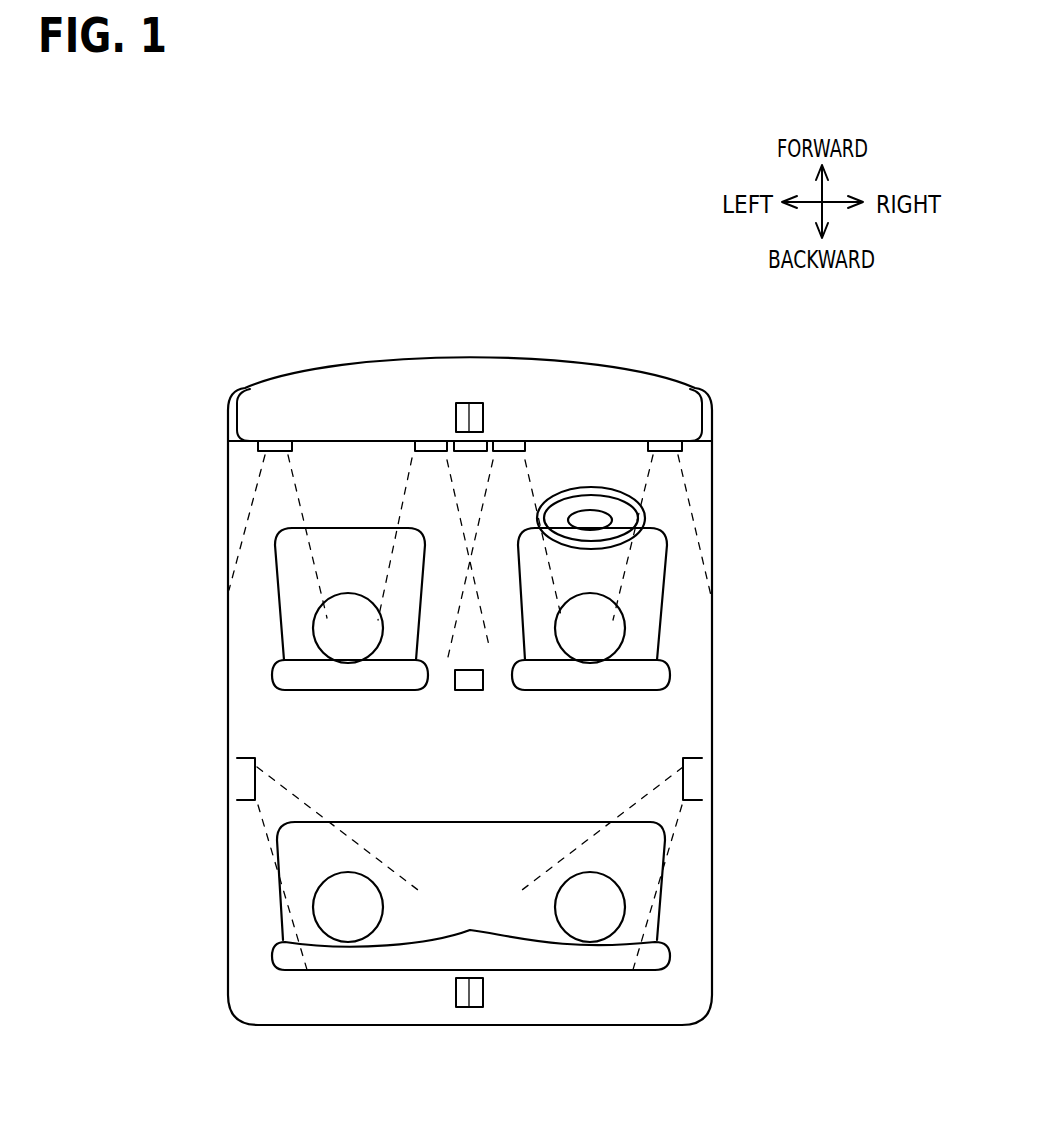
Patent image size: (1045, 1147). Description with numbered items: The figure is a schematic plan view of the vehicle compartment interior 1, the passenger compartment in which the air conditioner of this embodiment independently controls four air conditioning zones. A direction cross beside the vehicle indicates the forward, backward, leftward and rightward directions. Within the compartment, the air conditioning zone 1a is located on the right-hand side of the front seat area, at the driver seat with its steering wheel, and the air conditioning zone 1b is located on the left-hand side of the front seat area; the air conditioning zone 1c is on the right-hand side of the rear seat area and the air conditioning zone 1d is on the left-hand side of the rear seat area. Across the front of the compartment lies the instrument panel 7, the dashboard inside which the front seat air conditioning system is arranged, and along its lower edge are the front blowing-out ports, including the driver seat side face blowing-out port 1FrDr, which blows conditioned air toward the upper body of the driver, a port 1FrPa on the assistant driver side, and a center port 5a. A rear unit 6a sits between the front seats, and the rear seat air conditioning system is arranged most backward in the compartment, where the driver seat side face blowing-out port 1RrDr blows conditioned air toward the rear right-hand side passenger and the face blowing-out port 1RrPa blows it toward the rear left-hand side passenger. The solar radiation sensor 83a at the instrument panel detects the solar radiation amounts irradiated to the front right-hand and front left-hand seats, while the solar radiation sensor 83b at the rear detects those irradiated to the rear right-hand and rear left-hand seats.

The vehicle compartment interior 1 is at (245, 713).
The air conditioning zone 1a is at (660, 601).
The air conditioning zone 1b is at (366, 573).
The air conditioning zone 1c is at (641, 868).
The air conditioning zone 1d is at (327, 868).
The center speaker 5a is at (463, 452).
The audio control unit 6a is at (468, 690).
The instrument panel 7 is at (433, 365).
The solar radiation sensor 83a is at (479, 402).
The solar radiation sensor 83b is at (477, 1008).
The front passenger speaker 1FrPa is at (431, 450).
The driver seat side face blowing-out port 1FrDr is at (511, 450).
The face blowing-out port 1RrPa is at (258, 786).
The driver seat side face blowing-out port 1RrDr is at (682, 786).